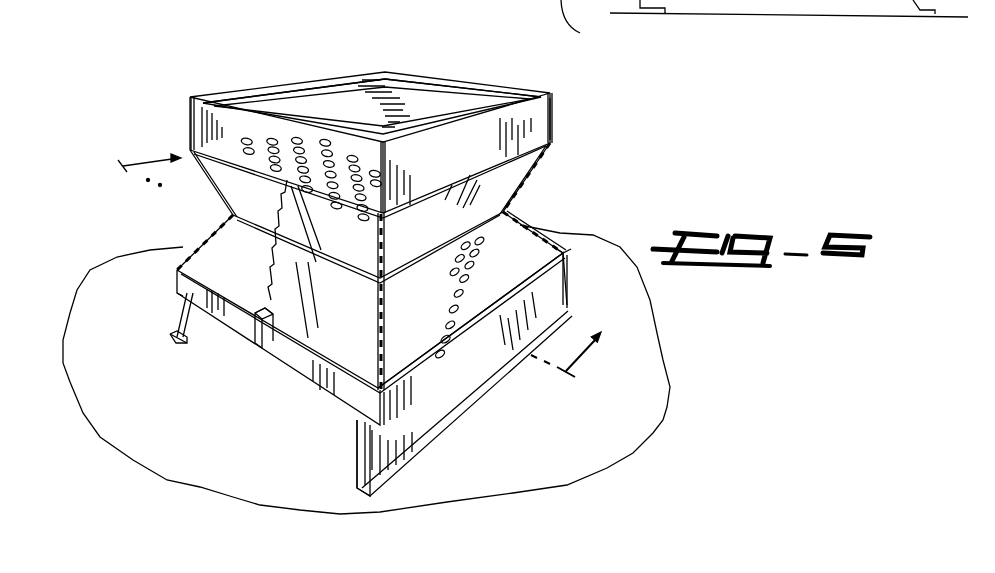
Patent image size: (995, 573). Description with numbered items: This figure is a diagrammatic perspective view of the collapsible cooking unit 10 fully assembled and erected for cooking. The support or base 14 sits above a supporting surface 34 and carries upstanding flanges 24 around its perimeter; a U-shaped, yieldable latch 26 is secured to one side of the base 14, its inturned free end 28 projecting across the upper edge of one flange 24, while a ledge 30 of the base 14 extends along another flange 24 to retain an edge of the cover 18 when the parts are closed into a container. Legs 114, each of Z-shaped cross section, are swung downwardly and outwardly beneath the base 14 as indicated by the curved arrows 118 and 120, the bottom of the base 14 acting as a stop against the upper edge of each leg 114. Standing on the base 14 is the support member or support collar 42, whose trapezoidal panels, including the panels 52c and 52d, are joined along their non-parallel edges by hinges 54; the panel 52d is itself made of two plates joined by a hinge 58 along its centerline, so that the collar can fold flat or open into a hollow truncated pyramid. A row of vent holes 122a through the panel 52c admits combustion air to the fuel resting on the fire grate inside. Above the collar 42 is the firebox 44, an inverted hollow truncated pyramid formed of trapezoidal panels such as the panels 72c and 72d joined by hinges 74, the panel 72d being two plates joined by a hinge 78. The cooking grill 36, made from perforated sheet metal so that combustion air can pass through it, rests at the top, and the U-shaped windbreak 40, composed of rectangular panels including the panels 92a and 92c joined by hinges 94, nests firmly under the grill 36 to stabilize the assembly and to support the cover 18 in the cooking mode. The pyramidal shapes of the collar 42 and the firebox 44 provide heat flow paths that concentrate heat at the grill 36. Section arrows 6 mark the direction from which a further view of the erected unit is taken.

The collapsible cooking unit 10 is at (184, 67).
The support or base 14 is at (287, 370).
The cover 18 is at (316, 90).
The upstanding flanges 24 is at (183, 287).
The U-shaped yieldable latch 26 is at (258, 342).
The inturned free end 28 is at (263, 313).
The ledge 30 is at (541, 247).
The supporting surface 34 is at (607, 440).
The cooking grill 36 is at (338, 157).
The windbreak 40 is at (556, 109).
The support member or support collar 42 is at (452, 344).
The firebox 44 is at (540, 156).
The trapezoidally shaped panel 52c is at (421, 283).
The trapezoidally shaped panel 52d is at (227, 255).
The hinges 54 is at (177, 260).
The hinge 58 is at (273, 284).
The trapezoidally shaped panel 72c is at (443, 199).
The trapezoidally shaped panel 72d is at (233, 188).
The hinges 74 is at (190, 150).
The hinge 78 is at (293, 232).
The rectangularly shaped panel 92a is at (231, 125).
The rectangularly shaped panel 92c is at (524, 114).
The hinges 94 is at (551, 131).
The leg 114 is at (177, 320).
The curved arrow 118 is at (203, 337).
The curved arrow 120 is at (349, 465).
The vent holes 122a is at (477, 290).
The section line 6- 6 is at (360, 260).